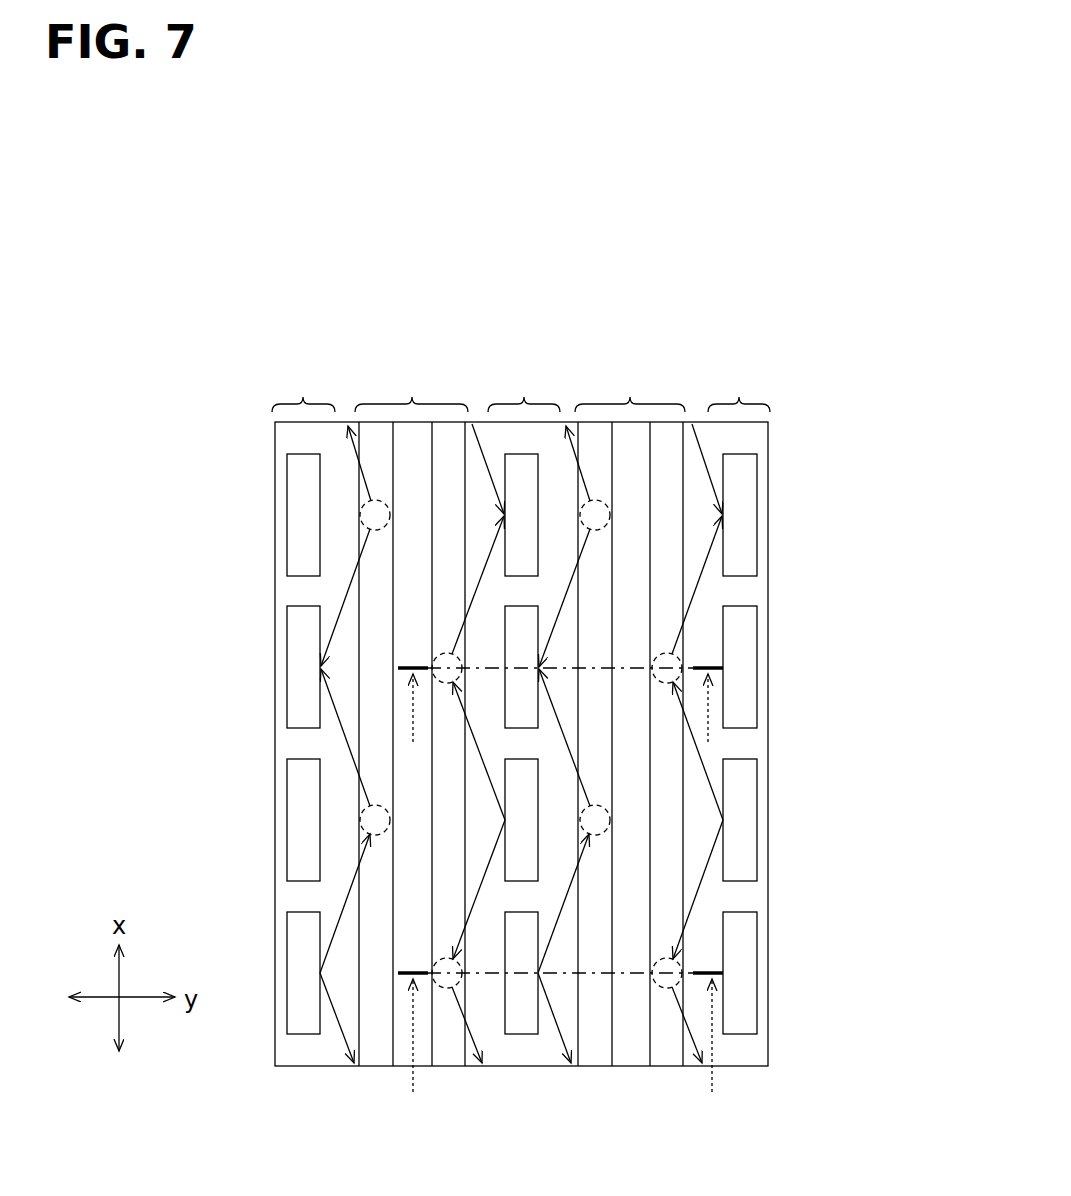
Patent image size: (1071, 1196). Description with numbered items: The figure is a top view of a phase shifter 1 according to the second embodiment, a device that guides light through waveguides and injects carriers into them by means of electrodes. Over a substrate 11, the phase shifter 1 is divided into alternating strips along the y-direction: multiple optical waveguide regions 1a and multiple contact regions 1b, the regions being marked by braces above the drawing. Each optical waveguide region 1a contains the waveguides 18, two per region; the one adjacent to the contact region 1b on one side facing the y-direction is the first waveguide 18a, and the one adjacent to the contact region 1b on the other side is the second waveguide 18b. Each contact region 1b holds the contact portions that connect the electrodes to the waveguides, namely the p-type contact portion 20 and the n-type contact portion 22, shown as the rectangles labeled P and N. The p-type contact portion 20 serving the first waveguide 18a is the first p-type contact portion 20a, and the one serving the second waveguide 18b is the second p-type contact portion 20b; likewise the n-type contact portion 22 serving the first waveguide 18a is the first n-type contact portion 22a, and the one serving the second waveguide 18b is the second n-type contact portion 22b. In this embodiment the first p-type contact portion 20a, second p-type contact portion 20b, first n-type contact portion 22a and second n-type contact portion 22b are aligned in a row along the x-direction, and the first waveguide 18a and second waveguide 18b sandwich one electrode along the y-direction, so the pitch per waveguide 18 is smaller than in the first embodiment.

The phase shifter 1 is at (350, 348).
The optical waveguide region 1a is at (555, 769).
The contact region 1b is at (521, 715).
The substrate 11 is at (272, 462).
The waveguide 18 is at (574, 798).
The first waveguide 18a is at (668, 1053).
The second waveguide 18b is at (590, 1055).
The p-type contact portion 20 is at (613, 896).
The first p-type contact portion 20a is at (750, 855).
The second p-type contact portion 20b is at (750, 998).
The n-type contact portion 22 is at (613, 591).
The first n-type contact portion 22a is at (750, 482).
The second n-type contact portion 22b is at (750, 634).